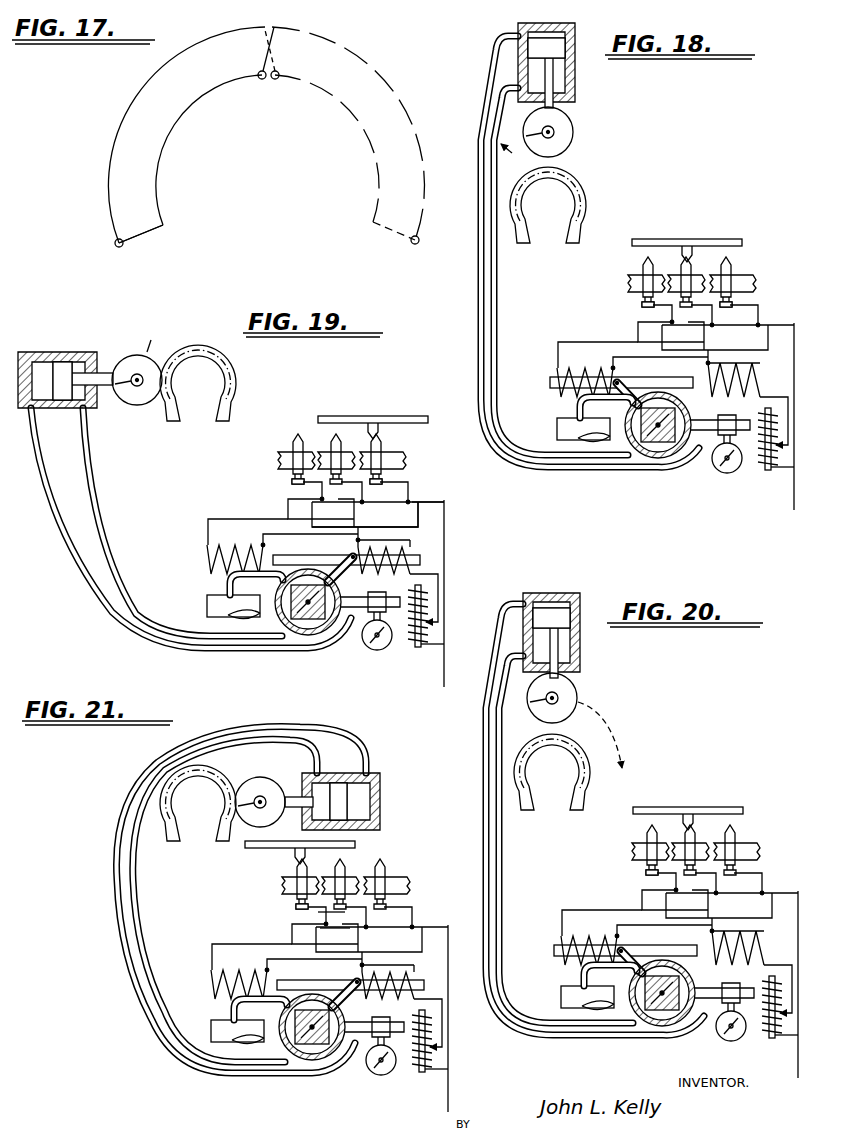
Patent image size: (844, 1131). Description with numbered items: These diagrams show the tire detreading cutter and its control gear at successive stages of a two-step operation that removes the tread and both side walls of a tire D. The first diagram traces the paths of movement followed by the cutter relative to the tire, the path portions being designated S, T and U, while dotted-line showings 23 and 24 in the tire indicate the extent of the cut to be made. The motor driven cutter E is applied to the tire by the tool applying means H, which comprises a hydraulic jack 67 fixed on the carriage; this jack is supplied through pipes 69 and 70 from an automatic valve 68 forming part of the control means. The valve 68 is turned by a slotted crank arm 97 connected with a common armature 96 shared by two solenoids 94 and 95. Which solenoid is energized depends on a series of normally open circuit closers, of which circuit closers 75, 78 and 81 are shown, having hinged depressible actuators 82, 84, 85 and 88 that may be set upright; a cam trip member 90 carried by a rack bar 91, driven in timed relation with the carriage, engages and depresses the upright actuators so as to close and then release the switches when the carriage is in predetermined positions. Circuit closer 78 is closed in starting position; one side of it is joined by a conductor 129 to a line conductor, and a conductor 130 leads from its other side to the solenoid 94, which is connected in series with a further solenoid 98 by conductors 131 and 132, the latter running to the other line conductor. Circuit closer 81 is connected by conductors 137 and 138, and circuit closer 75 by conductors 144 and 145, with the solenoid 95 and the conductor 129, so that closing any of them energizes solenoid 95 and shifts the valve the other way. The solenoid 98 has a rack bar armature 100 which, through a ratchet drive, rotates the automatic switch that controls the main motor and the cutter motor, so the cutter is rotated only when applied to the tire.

In FIG. 17, the dotted ring position 23 is at (382, 73).
In FIG. 20, the dotted ring position 23 is at (619, 722).
In FIG. 17, the dotted inner ring position 24 is at (362, 133).
In FIG. 21, the dotted inner ring position 24 is at (204, 743).
In FIG. 18, the hydraulic jack 67 is at (576, 83).
In FIG. 19, the hydraulic jack 67 is at (67, 353).
In FIG. 20, the hydraulic jack 67 is at (581, 623).
In FIG. 21, the hydraulic jack 67 is at (338, 801).
In FIG. 18, the automatic valve 68 is at (665, 471).
In FIG. 19, the automatic valve 68 is at (341, 604).
In FIG. 20, the automatic valve 68 is at (692, 970).
In FIG. 21, the automatic valve 68 is at (312, 1052).
In FIG. 18, the pipe 69 is at (490, 140).
In FIG. 19, the pipe 69 is at (90, 446).
In FIG. 20, the pipe 69 is at (484, 773).
In FIG. 21, the pipe 69 is at (315, 760).
In FIG. 18, the pipe 70 is at (500, 62).
In FIG. 19, the pipe 70 is at (48, 457).
In FIG. 20, the pipe 70 is at (607, 1040).
In FIG. 21, the pipe 70 is at (364, 760).
In FIG. 18, the circuit closer 75 is at (638, 304).
In FIG. 19, the circuit closer 75 is at (289, 482).
In FIG. 20, the circuit closer 75 is at (643, 874).
In FIG. 21, the circuit closer 75 is at (292, 906).
In FIG. 18, the circuit closer 78 is at (680, 309).
In FIG. 19, the circuit closer 78 is at (330, 489).
In FIG. 20, the circuit closer 78 is at (688, 880).
In FIG. 21, the circuit closer 78 is at (378, 878).
In FIG. 18, the circuit closer 81 is at (745, 306).
In FIG. 19, the circuit closer 81 is at (386, 488).
In FIG. 18, the hinged depressible actuator 82 is at (645, 268).
In FIG. 19, the hinged depressible actuator 82 is at (297, 446).
In FIG. 20, the hinged depressible actuator 82 is at (650, 840).
In FIG. 21, the hinged depressible actuator 82 is at (292, 883).
In FIG. 18, the hinged depressible actuator 84 is at (585, 370).
In FIG. 18, the hinged depressible actuator 85 is at (682, 270).
In FIG. 19, the hinged depressible actuator 85 is at (340, 438).
In FIG. 20, the hinged depressible actuator 85 is at (696, 846).
In FIG. 21, the hinged depressible actuator 85 is at (340, 874).
In FIG. 18, the hinged depressible actuator 88 is at (732, 269).
In FIG. 19, the hinged depressible actuator 88 is at (379, 455).
In FIG. 20, the hinged depressible actuator 88 is at (730, 850).
In FIG. 18, the cam trip member 90 is at (697, 240).
In FIG. 19, the cam trip member 90 is at (378, 415).
In FIG. 20, the cam trip member 90 is at (697, 806).
In FIG. 21, the cam trip member 90 is at (295, 858).
In FIG. 18, the rack bar 91 is at (662, 240).
In FIG. 19, the rack bar 91 is at (327, 415).
In FIG. 20, the rack bar 91 is at (662, 806).
In FIG. 21, the rack bar 91 is at (266, 845).
In FIG. 19, the solenoid 94 is at (235, 550).
In FIG. 20, the solenoid 94 is at (598, 932).
In FIG. 21, the solenoid 94 is at (210, 983).
In FIG. 18, the solenoid 95 is at (746, 367).
In FIG. 19, the solenoid 95 is at (384, 557).
In FIG. 20, the solenoid 95 is at (749, 936).
In FIG. 21, the solenoid 95 is at (390, 998).
In FIG. 18, the common armature 96 is at (551, 382).
In FIG. 19, the common armature 96 is at (305, 563).
In FIG. 20, the common armature 96 is at (625, 950).
In FIG. 21, the common armature 96 is at (305, 985).
In FIG. 18, the slotted crank arm 97 is at (640, 389).
In FIG. 19, the slotted crank arm 97 is at (333, 565).
In FIG. 20, the slotted crank arm 97 is at (659, 946).
In FIG. 21, the slotted crank arm 97 is at (341, 986).
In FIG. 18, the solenoid 98 is at (768, 464).
In FIG. 19, the solenoid 98 is at (430, 600).
In FIG. 20, the solenoid 98 is at (763, 1016).
In FIG. 21, the solenoid 98 is at (432, 1039).
In FIG. 18, the rack bar armature 100 is at (758, 414).
In FIG. 19, the rack bar armature 100 is at (410, 640).
In FIG. 20, the rack bar armature 100 is at (734, 1027).
In FIG. 21, the rack bar armature 100 is at (416, 1066).
In FIG. 18, the conductor 129 is at (794, 511).
In FIG. 19, the conductor 129 is at (444, 537).
In FIG. 20, the conductor 129 is at (798, 893).
In FIG. 21, the conductor 129 is at (448, 929).
In FIG. 18, the conductor 130 is at (575, 342).
In FIG. 19, the conductor 130 is at (236, 521).
In FIG. 20, the conductor 130 is at (585, 910).
In FIG. 21, the conductor 130 is at (252, 957).
In FIG. 18, the conductor 131 is at (772, 414).
In FIG. 19, the conductor 131 is at (440, 562).
In FIG. 20, the conductor 131 is at (777, 979).
In FIG. 21, the conductor 131 is at (441, 998).
In FIG. 18, the conductor 132 is at (785, 495).
In FIG. 19, the conductor 132 is at (432, 652).
In FIG. 20, the conductor 132 is at (790, 1056).
In FIG. 19, the conductor 137 is at (396, 518).
In FIG. 19, the conductor 138 is at (445, 501).
In FIG. 21, the conductor 144 is at (320, 928).
In FIG. 21, the conductor 145 is at (318, 913).
In FIG. 18, the tire D is at (586, 183).
In FIG. 19, the tire D is at (237, 373).
In FIG. 20, the tire D is at (589, 763).
In FIG. 21, the tire D is at (182, 826).
In FIG. 18, the tire detreading cutter E is at (571, 129).
In FIG. 19, the tire detreading cutter E is at (130, 364).
In FIG. 20, the tire detreading cutter E is at (569, 691).
In FIG. 21, the tire detreading cutter E is at (252, 825).
In FIG. 18, the tool applying means H is at (589, 34).
In FIG. 19, the tool applying means H is at (42, 347).
In FIG. 20, the tool applying means H is at (574, 593).
In FIG. 21, the tool applying means H is at (384, 789).
In FIG. 17, the ring segment S is at (125, 115).
In FIG. 18, the ring segment S is at (507, 156).
In FIG. 17, the end link T is at (150, 234).
In FIG. 17, the inner ring U is at (168, 143).
In FIG. 19, the inner ring U is at (195, 320).